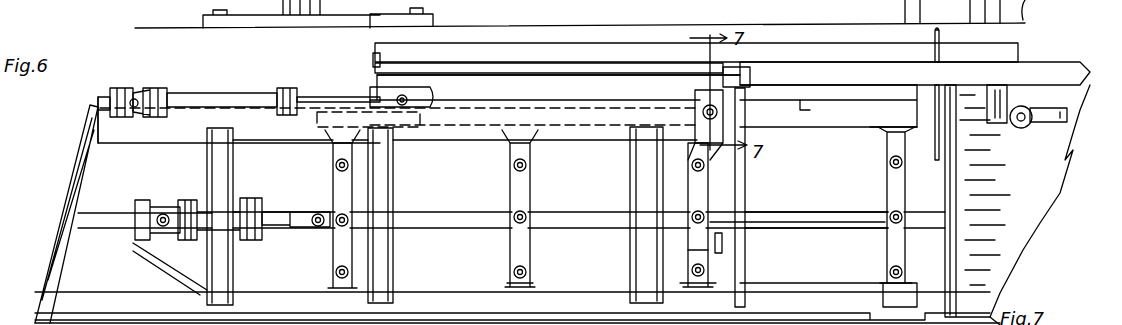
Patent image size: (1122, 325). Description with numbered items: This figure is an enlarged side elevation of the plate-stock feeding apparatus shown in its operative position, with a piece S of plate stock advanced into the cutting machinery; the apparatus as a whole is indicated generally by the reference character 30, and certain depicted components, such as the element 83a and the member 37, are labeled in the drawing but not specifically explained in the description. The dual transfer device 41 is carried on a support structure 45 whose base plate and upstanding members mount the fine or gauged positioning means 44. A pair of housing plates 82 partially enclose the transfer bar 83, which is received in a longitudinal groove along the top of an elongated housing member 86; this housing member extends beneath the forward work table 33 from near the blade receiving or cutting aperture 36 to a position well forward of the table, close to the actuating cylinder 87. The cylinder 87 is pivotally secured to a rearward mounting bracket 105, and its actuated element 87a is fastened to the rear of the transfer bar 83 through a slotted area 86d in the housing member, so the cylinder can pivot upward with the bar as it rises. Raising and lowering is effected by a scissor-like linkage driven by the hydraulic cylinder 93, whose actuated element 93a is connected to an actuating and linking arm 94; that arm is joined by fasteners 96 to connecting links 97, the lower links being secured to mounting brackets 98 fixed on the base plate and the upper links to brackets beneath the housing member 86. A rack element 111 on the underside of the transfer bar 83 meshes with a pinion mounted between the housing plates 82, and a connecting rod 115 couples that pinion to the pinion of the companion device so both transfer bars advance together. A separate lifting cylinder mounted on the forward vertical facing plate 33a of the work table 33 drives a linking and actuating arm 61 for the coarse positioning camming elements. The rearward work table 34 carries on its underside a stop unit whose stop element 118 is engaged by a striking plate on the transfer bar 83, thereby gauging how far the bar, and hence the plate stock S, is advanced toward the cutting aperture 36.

The feed mechanism 30 is at (198, 73).
The piece of plate stock S is at (380, 57).
The actuating cylinder 87 is at (236, 97).
The actuated element 87a is at (322, 97).
The slotted area 86d is at (380, 83).
The rearward mounting bracket 105 is at (100, 100).
The dual transfer device 41 is at (56, 156).
The fine or gauged positioning means 44 is at (55, 189).
The support structure 45 is at (92, 259).
The hydraulic cylinder 93 is at (253, 232).
The actuated element 93a is at (275, 245).
The housing plate 82 is at (468, 137).
The transfer bar 83 is at (513, 70).
The lower bar 83a is at (573, 63).
The housing member 86 is at (558, 86).
The connecting rod 115 is at (710, 105).
The rod 37 is at (945, 36).
The rearward work table 34 is at (1063, 70).
The blade receiving or cutting aperture 36 is at (940, 95).
The rack element 111 is at (805, 110).
The work table 33 is at (828, 114).
The stop element 118 is at (1057, 122).
The forward vertical facing plate 33a is at (745, 199).
The linking and actuating arm 61 is at (724, 243).
The actuating and linking arm 94 is at (832, 222).
The connecting link 97 is at (517, 237).
The fastener 96 is at (527, 210).
The mounting bracket 98 is at (530, 283).